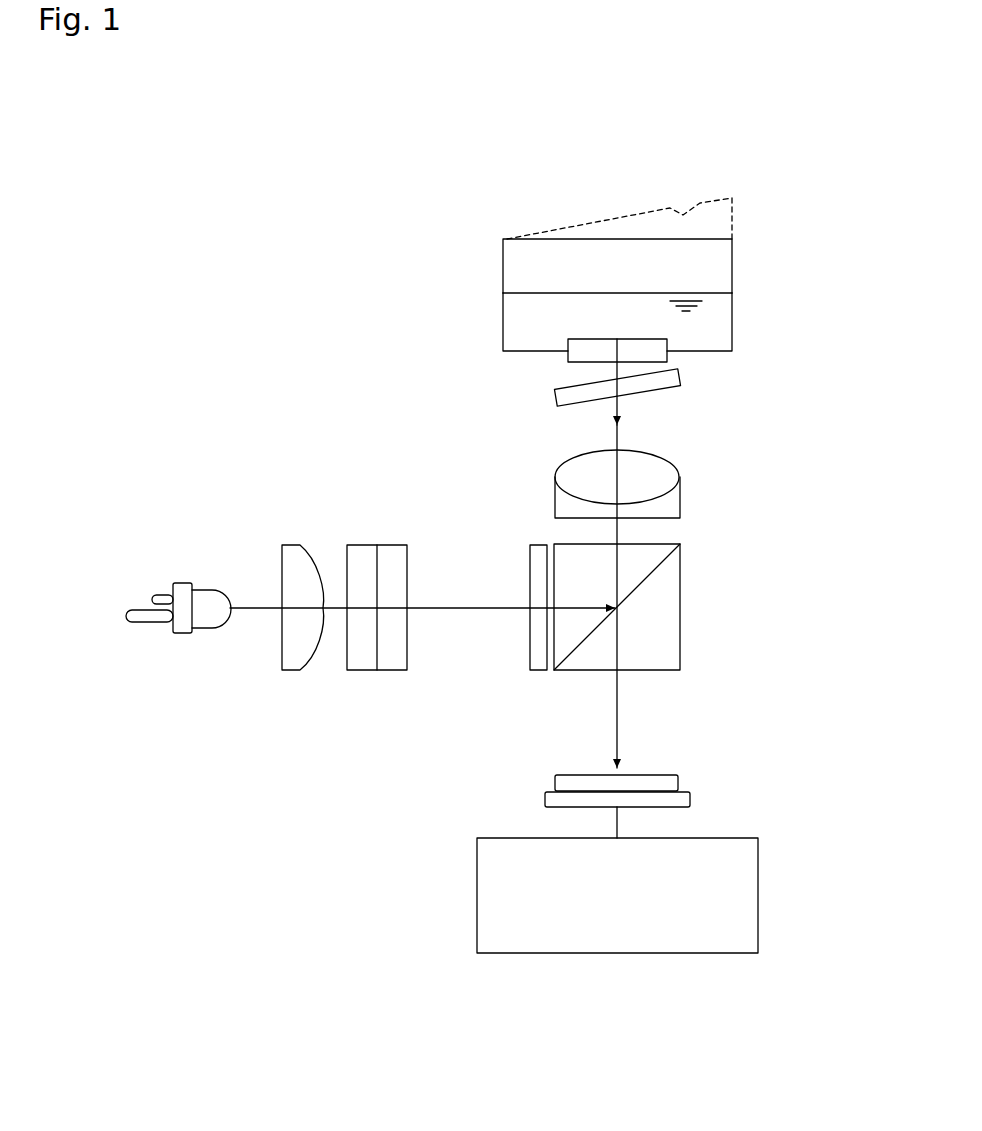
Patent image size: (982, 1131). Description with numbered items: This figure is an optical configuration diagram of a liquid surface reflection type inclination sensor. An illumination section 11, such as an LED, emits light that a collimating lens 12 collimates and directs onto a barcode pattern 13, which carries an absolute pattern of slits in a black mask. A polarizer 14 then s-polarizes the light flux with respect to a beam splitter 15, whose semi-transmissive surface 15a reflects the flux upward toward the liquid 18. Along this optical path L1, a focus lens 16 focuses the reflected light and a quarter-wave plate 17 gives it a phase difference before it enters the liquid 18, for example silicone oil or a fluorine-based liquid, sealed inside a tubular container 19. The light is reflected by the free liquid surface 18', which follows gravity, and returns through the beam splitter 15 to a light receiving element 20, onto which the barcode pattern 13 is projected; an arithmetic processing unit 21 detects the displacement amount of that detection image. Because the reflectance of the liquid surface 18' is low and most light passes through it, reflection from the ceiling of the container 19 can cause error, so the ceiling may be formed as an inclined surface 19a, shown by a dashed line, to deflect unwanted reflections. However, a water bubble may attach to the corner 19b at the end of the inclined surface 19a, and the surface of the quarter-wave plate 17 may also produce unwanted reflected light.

The illumination section 11 is at (202, 627).
The collimating lens 12 is at (293, 670).
The barcode pattern 13 is at (367, 670).
The polarizer 14 is at (538, 670).
The beam splitter 15 is at (680, 625).
The semi-transmissive surface 15a is at (650, 572).
The focus lens 16 is at (680, 487).
The λ/4 plate 17 is at (678, 373).
The liquid 18 is at (651, 327).
The liquid surface 18' is at (575, 282).
The container 19 is at (732, 252).
The inclined surface 19a is at (693, 203).
The corner 19b is at (737, 208).
The light receiving element 20 is at (680, 778).
The arithmetic processing unit 21 is at (758, 885).
The optical path L1 is at (617, 435).